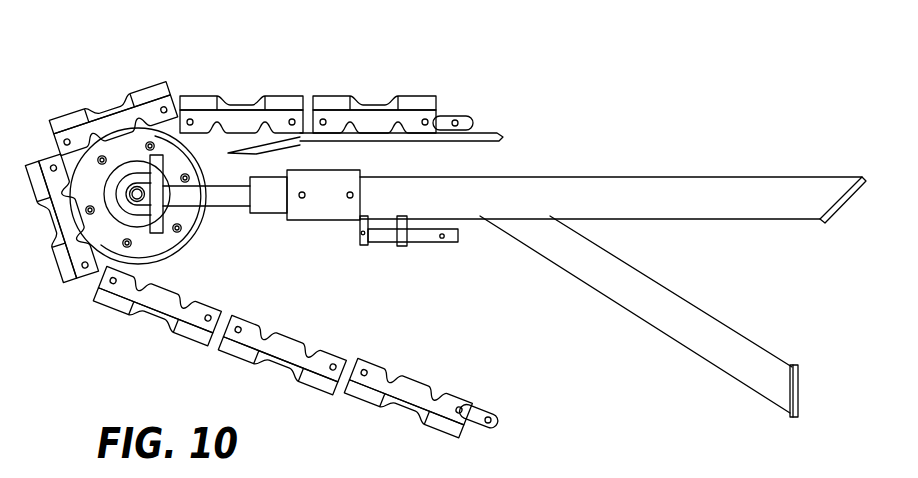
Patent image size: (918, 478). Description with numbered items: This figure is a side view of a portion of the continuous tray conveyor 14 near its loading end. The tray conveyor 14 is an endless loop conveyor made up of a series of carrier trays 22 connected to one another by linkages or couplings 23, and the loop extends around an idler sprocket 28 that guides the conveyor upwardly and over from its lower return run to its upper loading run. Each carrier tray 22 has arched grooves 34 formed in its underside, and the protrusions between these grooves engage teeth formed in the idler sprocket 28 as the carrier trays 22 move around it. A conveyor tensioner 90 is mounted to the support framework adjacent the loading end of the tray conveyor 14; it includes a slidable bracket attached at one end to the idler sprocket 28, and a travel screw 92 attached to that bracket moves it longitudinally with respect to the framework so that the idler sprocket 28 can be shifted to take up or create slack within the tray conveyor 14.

The tray conveyor 14 is at (125, 75).
The carrier tray 22 is at (419, 98).
The linkage or coupling 23 is at (448, 117).
The idler sprocket 28 is at (105, 238).
The arched grooves 34 is at (447, 393).
The conveyor tensioner 90 is at (320, 232).
The travel screw 92 is at (426, 243).